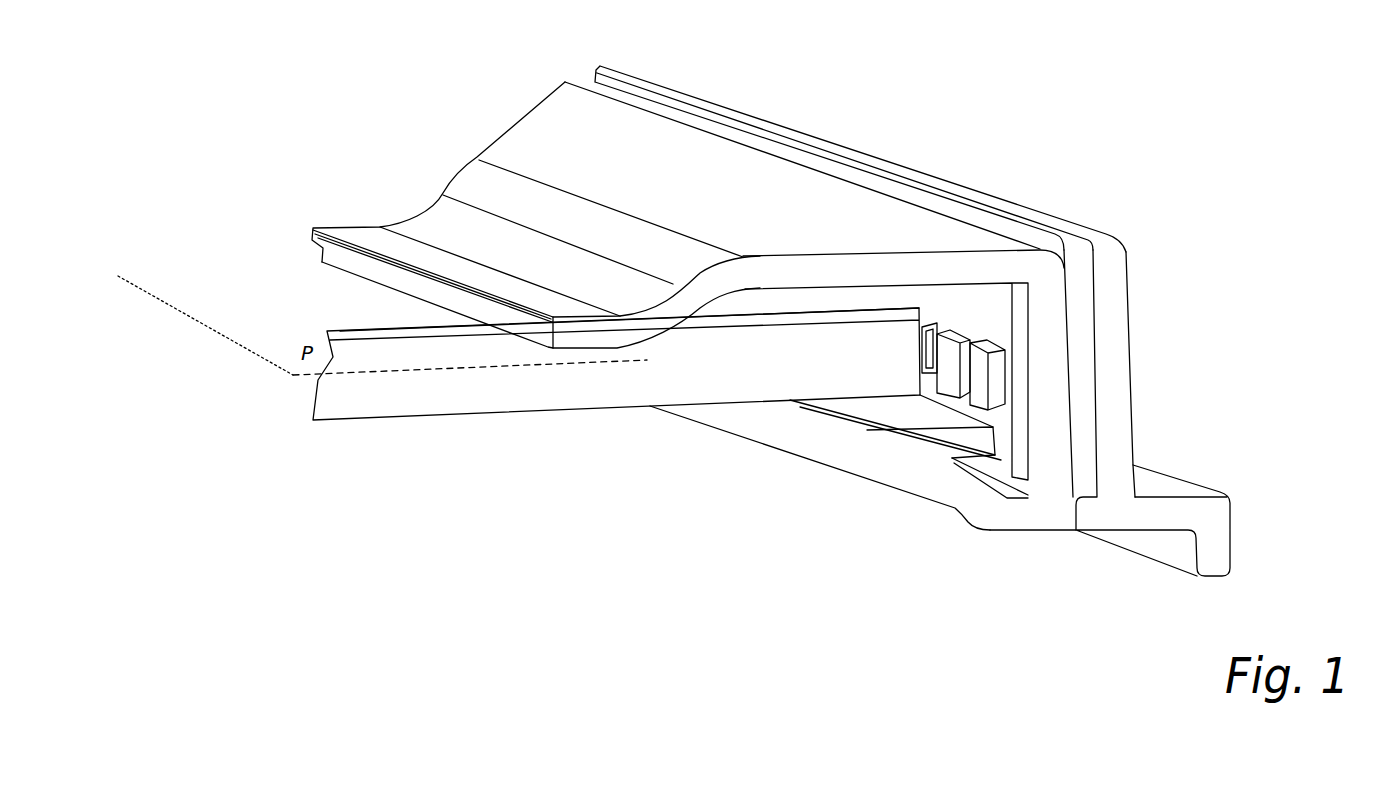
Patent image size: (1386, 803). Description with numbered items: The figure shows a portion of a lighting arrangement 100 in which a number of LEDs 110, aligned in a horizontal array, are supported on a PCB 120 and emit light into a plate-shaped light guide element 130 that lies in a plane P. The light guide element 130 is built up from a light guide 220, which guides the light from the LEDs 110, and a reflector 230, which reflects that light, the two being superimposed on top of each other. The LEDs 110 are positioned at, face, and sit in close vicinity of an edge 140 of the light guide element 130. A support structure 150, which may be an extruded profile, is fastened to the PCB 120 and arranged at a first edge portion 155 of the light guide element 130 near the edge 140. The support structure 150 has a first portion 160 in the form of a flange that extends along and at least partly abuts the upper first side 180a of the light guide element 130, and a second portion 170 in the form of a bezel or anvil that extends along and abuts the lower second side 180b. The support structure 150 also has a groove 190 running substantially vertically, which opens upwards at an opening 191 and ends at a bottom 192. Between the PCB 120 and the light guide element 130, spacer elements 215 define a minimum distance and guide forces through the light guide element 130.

The lighting arrangement 100 is at (1233, 259).
The LED 110 is at (992, 393).
The PCB 120 is at (1080, 490).
The light guide element 130 is at (759, 407).
The edge 140 is at (923, 360).
The support structure 150 is at (1180, 484).
The first edge portion 155 is at (837, 322).
The first portion 160 is at (634, 327).
The second portion 170 is at (923, 452).
The first side 180a is at (817, 322).
The second side 180b is at (795, 405).
The groove 190 is at (1080, 346).
The opening 191 is at (1070, 257).
The bottom 192 is at (1080, 512).
The spacer element 215 is at (921, 347).
The light guide 220 is at (472, 403).
The reflector 230 is at (440, 331).